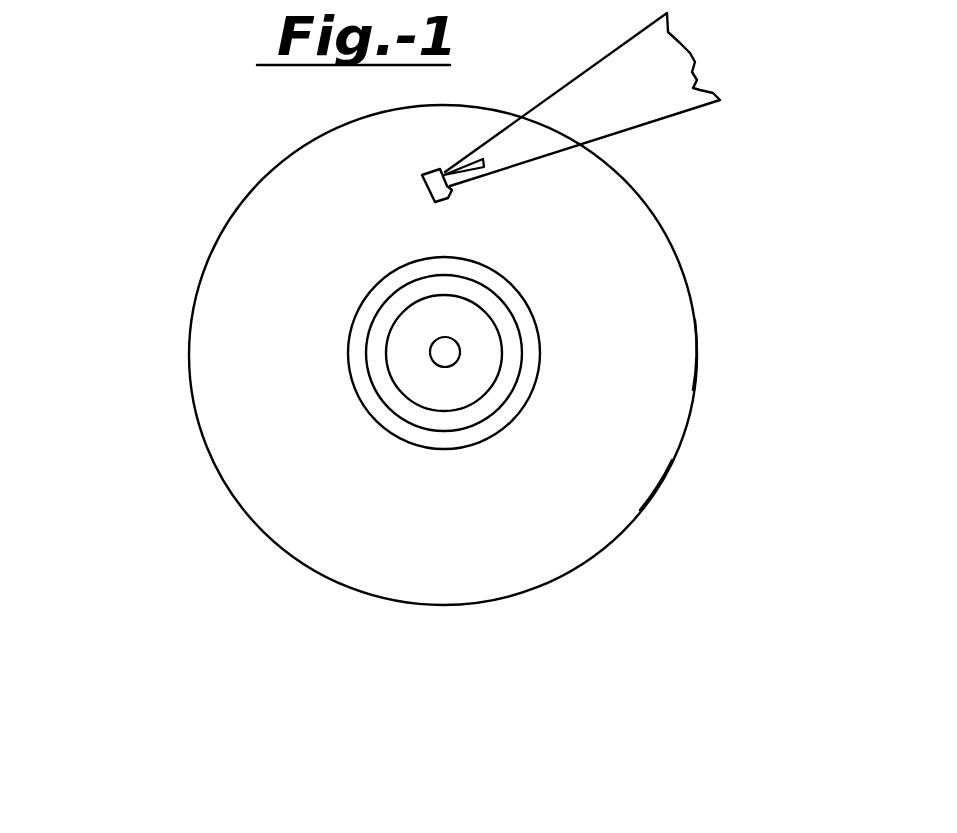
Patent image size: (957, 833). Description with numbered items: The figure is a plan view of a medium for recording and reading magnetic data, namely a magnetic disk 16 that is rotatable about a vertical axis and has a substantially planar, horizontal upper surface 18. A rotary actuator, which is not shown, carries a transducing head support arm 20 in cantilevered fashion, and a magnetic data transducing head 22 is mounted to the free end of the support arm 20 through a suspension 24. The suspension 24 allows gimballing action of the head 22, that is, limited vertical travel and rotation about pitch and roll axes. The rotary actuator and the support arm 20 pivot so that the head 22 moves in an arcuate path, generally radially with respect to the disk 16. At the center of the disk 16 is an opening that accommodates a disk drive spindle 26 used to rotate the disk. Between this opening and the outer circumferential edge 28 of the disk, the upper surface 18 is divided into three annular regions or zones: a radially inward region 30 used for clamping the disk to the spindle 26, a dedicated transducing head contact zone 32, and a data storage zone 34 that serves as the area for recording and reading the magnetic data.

The magnetic disk 16 is at (253, 212).
The upper surface 18 is at (307, 300).
The transducing head support arm 20 is at (672, 123).
The magnetic data transducing head 22 is at (445, 198).
The suspension 24 is at (461, 163).
The disk drive spindle 26 is at (447, 360).
The outer circumferential edge 28 is at (658, 486).
The radially inward region 30 is at (485, 342).
The transducing head contact zone 32 is at (362, 373).
The data storage zone 34 is at (683, 360).